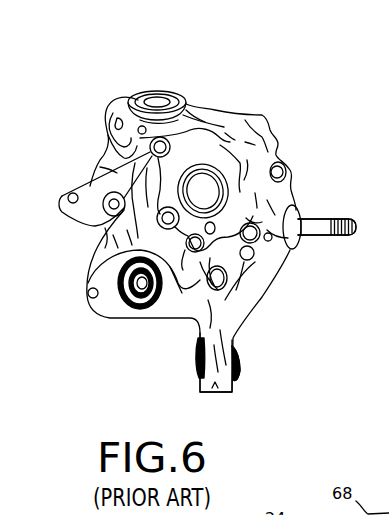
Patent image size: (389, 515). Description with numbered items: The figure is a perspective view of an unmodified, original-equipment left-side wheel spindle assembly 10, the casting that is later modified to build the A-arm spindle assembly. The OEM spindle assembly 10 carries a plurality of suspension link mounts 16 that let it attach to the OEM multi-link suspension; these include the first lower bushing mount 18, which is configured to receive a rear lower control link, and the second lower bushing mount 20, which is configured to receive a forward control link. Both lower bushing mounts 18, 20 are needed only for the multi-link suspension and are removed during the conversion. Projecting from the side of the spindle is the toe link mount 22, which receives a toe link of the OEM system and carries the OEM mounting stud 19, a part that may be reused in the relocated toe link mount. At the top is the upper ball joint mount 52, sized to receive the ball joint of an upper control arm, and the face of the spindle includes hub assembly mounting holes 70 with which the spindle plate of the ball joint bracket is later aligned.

The OEM wheel spindle assembly 10 is at (125, 88).
The upper ball joint mount 52 is at (189, 93).
The hub assembly mounting holes 70 is at (105, 197).
The first lower bushing mount 18 is at (90, 273).
The suspension link mounts 16 is at (182, 361).
The second lower bushing mount 20 is at (233, 386).
The toe link mount 22 is at (304, 214).
The mounting stud 19 is at (315, 238).